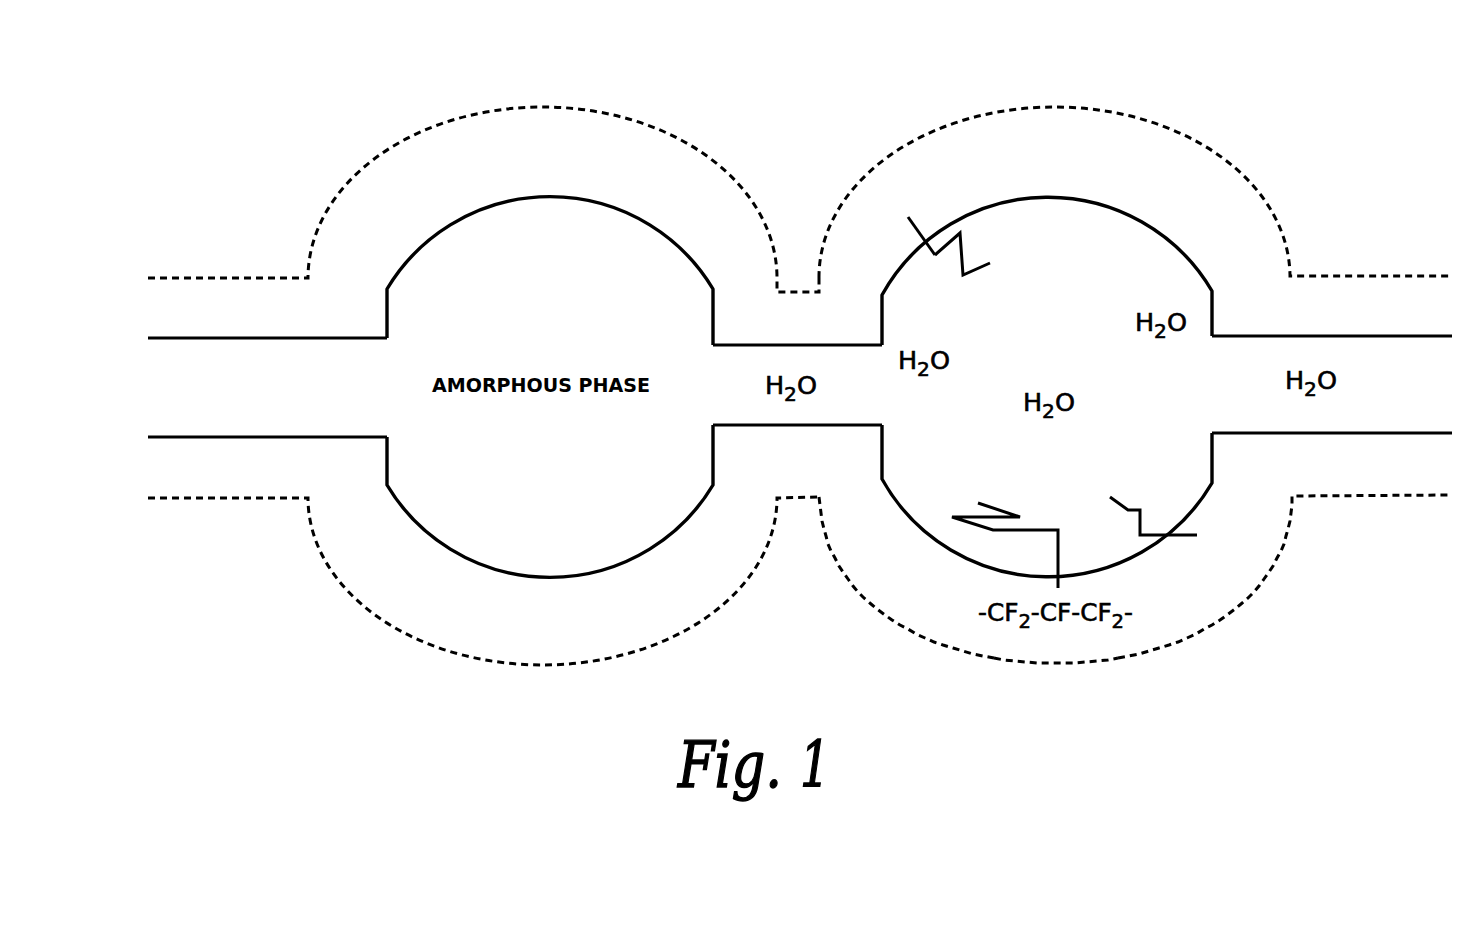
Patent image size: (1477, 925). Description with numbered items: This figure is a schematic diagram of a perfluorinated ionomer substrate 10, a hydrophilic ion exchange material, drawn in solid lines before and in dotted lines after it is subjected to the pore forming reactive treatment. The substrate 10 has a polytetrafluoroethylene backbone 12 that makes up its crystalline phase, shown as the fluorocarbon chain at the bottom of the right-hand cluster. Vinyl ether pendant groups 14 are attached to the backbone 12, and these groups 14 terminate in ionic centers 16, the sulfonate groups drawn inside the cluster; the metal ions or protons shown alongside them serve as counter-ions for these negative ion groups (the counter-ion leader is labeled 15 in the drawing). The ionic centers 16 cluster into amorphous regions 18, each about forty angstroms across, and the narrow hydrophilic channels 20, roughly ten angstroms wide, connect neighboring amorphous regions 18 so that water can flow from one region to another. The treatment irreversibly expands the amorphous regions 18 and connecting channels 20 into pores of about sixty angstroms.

The perfluorinated ionomer substrate 10 is at (1300, 156).
The polytetrafluoroethylene backbone 12 is at (1072, 640).
The vinyl ether pendant groups 14 is at (917, 225).
The counter ion 15 is at (950, 452).
The ionic centers 16 is at (1037, 250).
The amorphous regions 18 is at (1203, 487).
The hydrophilic channels 20 is at (828, 410).